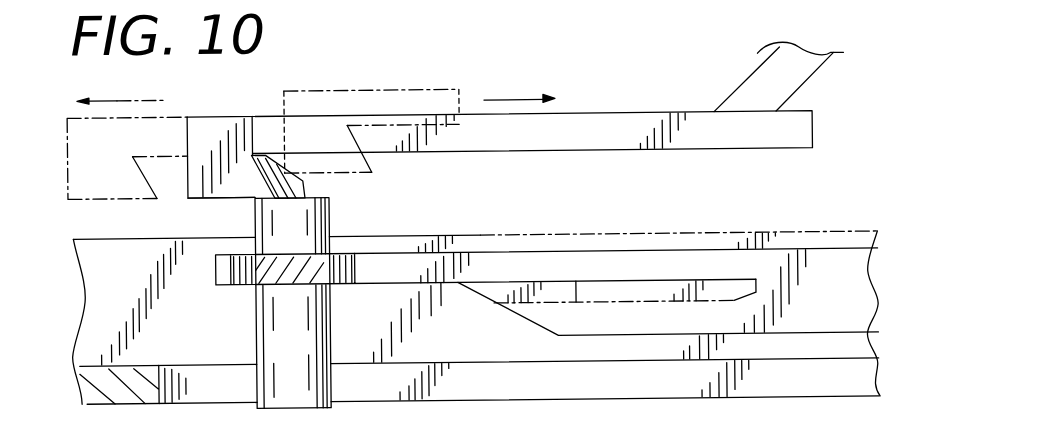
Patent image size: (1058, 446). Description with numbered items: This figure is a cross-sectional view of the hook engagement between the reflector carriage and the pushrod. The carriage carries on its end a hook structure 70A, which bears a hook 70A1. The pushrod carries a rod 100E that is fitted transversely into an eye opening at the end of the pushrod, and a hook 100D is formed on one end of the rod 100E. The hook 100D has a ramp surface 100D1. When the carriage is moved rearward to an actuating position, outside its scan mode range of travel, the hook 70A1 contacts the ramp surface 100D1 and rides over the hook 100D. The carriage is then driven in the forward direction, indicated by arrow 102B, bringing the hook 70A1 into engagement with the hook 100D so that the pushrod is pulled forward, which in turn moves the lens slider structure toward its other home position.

The hook structure 70A is at (570, 111).
The hook 70A1 is at (238, 190).
The hook 100D is at (266, 155).
The ramp surface 100D1 is at (303, 181).
The rod 100E is at (329, 218).
The direction of movement 102B is at (506, 100).